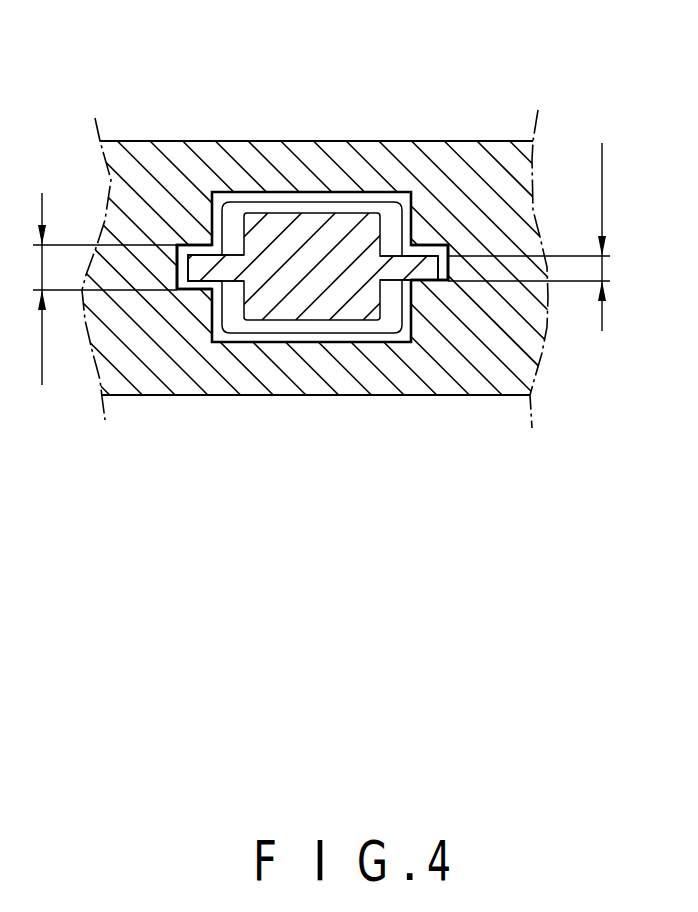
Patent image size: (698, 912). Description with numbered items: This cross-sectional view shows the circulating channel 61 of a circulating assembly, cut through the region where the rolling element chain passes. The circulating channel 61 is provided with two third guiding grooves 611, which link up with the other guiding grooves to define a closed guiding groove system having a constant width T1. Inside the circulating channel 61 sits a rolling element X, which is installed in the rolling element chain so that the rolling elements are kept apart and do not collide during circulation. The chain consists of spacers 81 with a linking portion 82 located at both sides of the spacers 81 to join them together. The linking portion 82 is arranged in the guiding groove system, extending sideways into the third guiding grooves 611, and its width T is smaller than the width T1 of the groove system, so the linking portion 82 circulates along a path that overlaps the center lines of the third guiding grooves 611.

The circulating channel 61 is at (308, 198).
The third guiding groove 611 is at (200, 262).
The spacer 81 is at (322, 307).
The linking portion 82 is at (198, 272).
The rolling element X is at (385, 210).
The width of the linking portion T is at (529, 237).
The width of the guiding groove system T1 is at (88, 289).